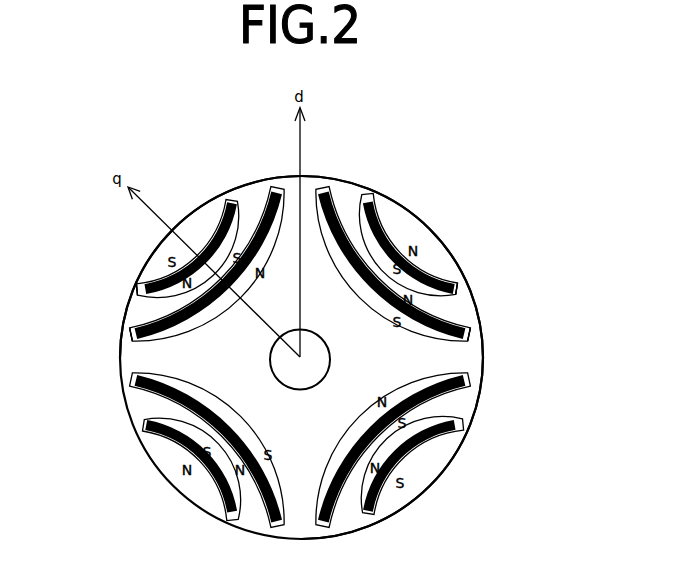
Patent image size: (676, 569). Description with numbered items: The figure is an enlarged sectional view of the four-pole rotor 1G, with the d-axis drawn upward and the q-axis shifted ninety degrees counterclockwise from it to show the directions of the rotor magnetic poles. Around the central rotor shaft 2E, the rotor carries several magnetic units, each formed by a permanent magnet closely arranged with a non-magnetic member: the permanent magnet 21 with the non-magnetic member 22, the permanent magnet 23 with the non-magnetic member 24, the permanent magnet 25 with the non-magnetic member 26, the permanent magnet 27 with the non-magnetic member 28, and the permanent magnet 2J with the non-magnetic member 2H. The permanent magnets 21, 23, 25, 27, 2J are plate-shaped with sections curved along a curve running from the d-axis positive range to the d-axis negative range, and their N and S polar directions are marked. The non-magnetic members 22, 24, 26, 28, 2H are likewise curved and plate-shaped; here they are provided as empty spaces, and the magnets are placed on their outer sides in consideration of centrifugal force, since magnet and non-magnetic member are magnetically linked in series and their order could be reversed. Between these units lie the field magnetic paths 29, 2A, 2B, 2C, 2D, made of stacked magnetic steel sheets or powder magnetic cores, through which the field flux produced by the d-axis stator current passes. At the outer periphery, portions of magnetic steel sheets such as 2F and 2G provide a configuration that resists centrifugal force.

The rotor 1G is at (192, 252).
The field magnetic path 2A is at (257, 205).
The field magnetic path 2B is at (307, 198).
The field magnetic path 2C is at (350, 208).
The field magnetic path 2D is at (398, 220).
The rotor shaft 2E is at (320, 380).
The outer peripheral portion 2F is at (127, 385).
The outer peripheral portion 2G is at (138, 440).
The non-magnetic member 2H is at (462, 423).
The permanent magnet 2J is at (453, 443).
The permanent magnet 21 is at (145, 277).
The non-magnetic member 22 is at (140, 295).
The permanent magnet 23 is at (133, 330).
The non-magnetic member 24 is at (133, 347).
The permanent magnet 25 is at (450, 279).
The non-magnetic member 26 is at (458, 297).
The permanent magnet 27 is at (474, 337).
The non-magnetic member 28 is at (478, 340).
The field magnetic path 29 is at (203, 220).